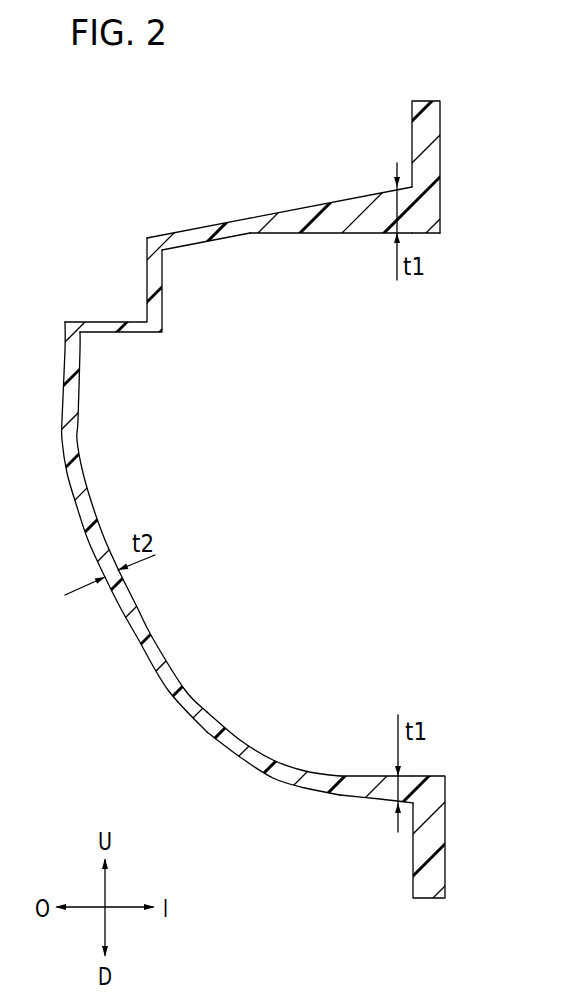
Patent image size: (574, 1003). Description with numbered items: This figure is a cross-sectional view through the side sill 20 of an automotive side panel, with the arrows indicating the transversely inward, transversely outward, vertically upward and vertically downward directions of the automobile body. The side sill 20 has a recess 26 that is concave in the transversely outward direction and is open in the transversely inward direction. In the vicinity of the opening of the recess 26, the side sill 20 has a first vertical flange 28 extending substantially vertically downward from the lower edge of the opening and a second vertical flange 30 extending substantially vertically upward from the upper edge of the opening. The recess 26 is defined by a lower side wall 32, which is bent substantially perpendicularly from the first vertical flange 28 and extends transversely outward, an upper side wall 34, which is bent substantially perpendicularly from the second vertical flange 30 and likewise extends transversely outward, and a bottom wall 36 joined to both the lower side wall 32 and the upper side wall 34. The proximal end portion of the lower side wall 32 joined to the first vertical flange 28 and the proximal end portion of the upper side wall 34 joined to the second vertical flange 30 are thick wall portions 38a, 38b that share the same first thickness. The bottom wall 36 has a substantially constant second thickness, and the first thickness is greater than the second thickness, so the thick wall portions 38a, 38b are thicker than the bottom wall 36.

The side sill 20 is at (287, 501).
The recess 26 is at (432, 236).
The first vertical flange 28 is at (432, 885).
The second vertical flange 30 is at (421, 102).
The lower side wall 32 is at (310, 776).
The upper side wall 34 is at (279, 226).
The bottom wall 36 is at (120, 603).
The thick wall portion 38a is at (360, 783).
The thick wall portion 38b is at (335, 228).